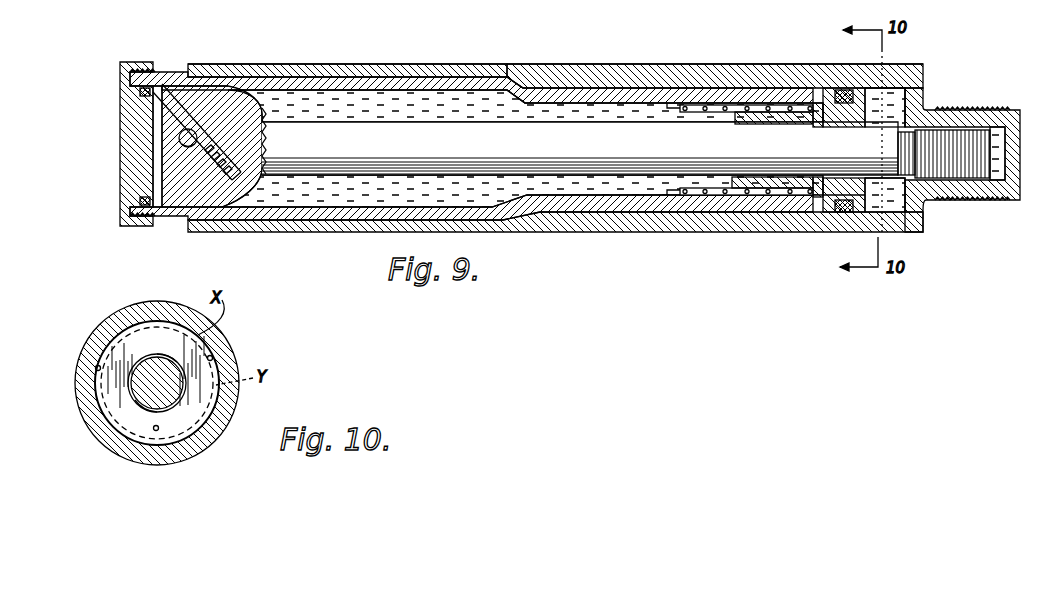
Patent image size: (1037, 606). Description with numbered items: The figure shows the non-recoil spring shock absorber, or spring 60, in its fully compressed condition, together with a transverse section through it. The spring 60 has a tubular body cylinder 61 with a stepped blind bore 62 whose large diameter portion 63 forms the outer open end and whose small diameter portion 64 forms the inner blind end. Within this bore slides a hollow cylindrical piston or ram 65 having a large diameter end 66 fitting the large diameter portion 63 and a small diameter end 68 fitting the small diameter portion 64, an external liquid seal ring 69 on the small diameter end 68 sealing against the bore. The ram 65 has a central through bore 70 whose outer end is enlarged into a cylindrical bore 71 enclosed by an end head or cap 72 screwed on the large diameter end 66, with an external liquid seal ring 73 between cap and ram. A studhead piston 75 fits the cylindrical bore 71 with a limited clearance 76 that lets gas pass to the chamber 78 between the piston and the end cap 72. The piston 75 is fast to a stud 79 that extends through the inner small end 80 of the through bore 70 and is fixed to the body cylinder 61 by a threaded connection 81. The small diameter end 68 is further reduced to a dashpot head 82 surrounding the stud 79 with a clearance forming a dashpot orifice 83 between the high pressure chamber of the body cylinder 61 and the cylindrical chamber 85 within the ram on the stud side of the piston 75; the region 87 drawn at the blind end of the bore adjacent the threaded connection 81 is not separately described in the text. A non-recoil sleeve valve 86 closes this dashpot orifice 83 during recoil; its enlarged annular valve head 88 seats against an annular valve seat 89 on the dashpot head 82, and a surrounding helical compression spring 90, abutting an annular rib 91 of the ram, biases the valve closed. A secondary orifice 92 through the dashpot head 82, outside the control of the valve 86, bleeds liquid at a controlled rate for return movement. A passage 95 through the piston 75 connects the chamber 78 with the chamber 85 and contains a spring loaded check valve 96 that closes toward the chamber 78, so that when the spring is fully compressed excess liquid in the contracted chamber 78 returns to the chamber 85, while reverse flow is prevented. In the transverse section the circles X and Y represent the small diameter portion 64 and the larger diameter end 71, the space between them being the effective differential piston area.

In FIG. 9, the spring 60 is at (537, 67).
In FIG. 10, the spring 60 is at (97, 325).
In FIG. 9, the tubular body cylinder 61 is at (908, 68).
In FIG. 10, the tubular body cylinder 61 is at (200, 454).
In FIG. 9, the stepped blind bore 62 is at (906, 230).
In FIG. 10, the stepped blind bore 62 is at (94, 357).
In FIG. 9, the large diameter portion 63 is at (508, 80).
In FIG. 9, the small diameter portion 64 is at (875, 90).
In FIG. 10, the small diameter portion 64 is at (213, 356).
In FIG. 9, the hollow cylindrical piston or ram 65 is at (186, 63).
In FIG. 10, the hollow cylindrical piston or ram 65 is at (144, 337).
In FIG. 9, the large diameter end 66 is at (375, 77).
In FIG. 9, the small diameter end 68 is at (605, 225).
In FIG. 9, the external liquid seal ring 69 is at (845, 213).
In FIG. 9, the central through bore 70 is at (300, 97).
In FIG. 9, the cylindrical bore 71 is at (330, 207).
In FIG. 9, the end head or cap 72 is at (125, 127).
In FIG. 9, the external liquid seal ring 73 is at (140, 208).
In FIG. 9, the studhead piston 75 is at (205, 98).
In FIG. 9, the limited clearance 76 is at (197, 88).
In FIG. 9, the chamber 78 is at (157, 182).
In FIG. 9, the stud 79 is at (610, 145).
In FIG. 10, the stud 79 is at (166, 395).
In FIG. 9, the inner small end 80 is at (632, 104).
In FIG. 9, the threaded connection 81 is at (975, 116).
In FIG. 9, the dashpot head 82 is at (850, 108).
In FIG. 10, the dashpot head 82 is at (142, 426).
In FIG. 9, the dashpot orifice 83 is at (830, 182).
In FIG. 10, the dashpot orifice 83 is at (163, 357).
In FIG. 9, the cylindrical chamber 85 is at (403, 212).
In FIG. 9, the non-recoil sleeve valve 86 is at (770, 124).
In FIG. 9, the fluid chamber 87 is at (900, 98).
In FIG. 9, the annular valve head 88 is at (845, 92).
In FIG. 9, the annular valve seat 89 is at (820, 106).
In FIG. 9, the helical compression spring 90 is at (710, 112).
In FIG. 9, the annular rib 91 is at (675, 196).
In FIG. 9, the secondary orifice 92 is at (828, 194).
In FIG. 10, the secondary orifice 92 is at (156, 431).
In FIG. 9, the passage 95 is at (160, 97).
In FIG. 9, the spring loaded check valve 96 is at (180, 138).